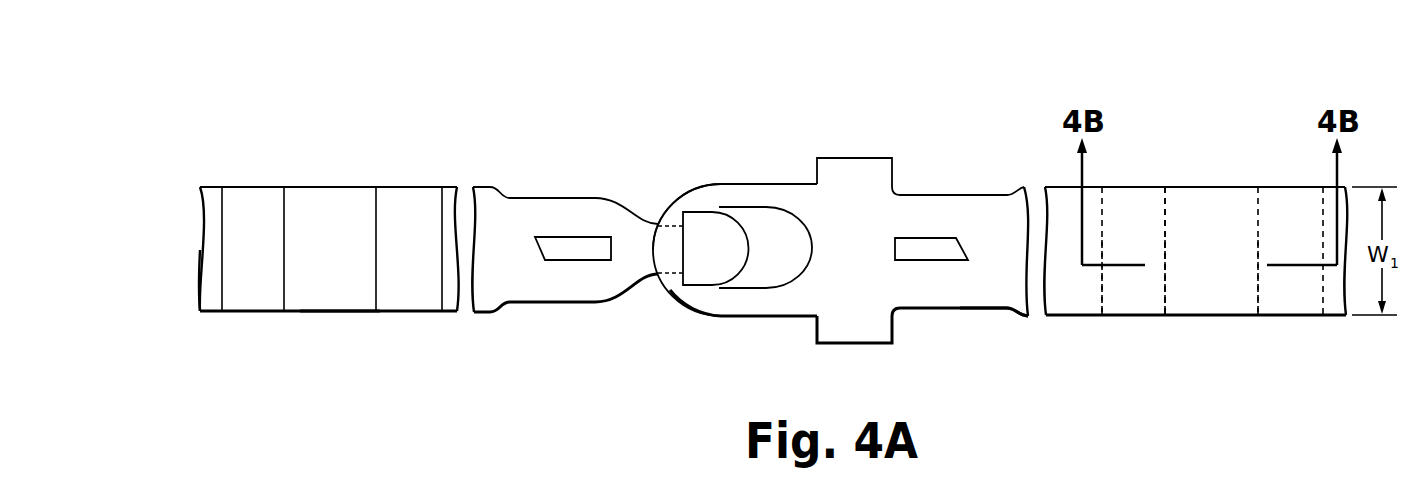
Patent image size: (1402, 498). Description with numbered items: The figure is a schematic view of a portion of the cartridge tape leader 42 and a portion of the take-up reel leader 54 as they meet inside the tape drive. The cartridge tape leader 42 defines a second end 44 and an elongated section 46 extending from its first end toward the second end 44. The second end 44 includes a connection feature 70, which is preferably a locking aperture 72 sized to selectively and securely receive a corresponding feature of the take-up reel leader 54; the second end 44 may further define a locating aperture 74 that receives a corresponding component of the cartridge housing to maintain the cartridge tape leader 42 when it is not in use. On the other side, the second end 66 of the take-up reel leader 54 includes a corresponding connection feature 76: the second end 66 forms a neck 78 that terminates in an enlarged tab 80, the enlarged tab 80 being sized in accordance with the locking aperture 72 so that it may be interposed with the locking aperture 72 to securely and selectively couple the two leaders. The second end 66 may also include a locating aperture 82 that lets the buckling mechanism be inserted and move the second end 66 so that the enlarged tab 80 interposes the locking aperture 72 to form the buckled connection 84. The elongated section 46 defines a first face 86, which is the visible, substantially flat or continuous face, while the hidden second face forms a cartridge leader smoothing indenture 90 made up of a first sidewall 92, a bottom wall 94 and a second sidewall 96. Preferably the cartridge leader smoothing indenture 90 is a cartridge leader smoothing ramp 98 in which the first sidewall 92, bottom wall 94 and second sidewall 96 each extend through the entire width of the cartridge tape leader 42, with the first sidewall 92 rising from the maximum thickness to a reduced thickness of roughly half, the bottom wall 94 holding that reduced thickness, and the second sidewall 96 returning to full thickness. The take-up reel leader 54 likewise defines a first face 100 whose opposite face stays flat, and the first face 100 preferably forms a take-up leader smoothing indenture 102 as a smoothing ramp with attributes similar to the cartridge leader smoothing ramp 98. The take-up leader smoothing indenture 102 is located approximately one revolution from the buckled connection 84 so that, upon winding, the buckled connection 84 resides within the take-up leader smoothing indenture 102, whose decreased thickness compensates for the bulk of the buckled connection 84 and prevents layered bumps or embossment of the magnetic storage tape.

The cartridge tape leader 42 is at (1093, 80).
The second end 44 is at (918, 193).
The elongated section 46 is at (1078, 316).
The take-up reel leader 54 is at (341, 147).
The second end 66 is at (533, 198).
The connection feature 70 is at (768, 195).
The locking aperture 72 is at (765, 270).
The locating aperture 74 is at (937, 238).
The connection feature 76 is at (646, 278).
The neck 78 is at (652, 225).
The enlarged tab 80 is at (705, 268).
The locating aperture 82 is at (556, 261).
The buckled connection 84 is at (712, 178).
The first face 86 is at (1056, 295).
The cartridge leader smoothing indenture 90 is at (1222, 168).
The first sidewall 92 is at (1132, 300).
The bottom wall 94 is at (1208, 298).
The second sidewall 96 is at (1288, 296).
The cartridge leader smoothing ramp 98 is at (1179, 200).
The first face 100 is at (211, 294).
The take-up leader smoothing indenture 102 is at (336, 300).